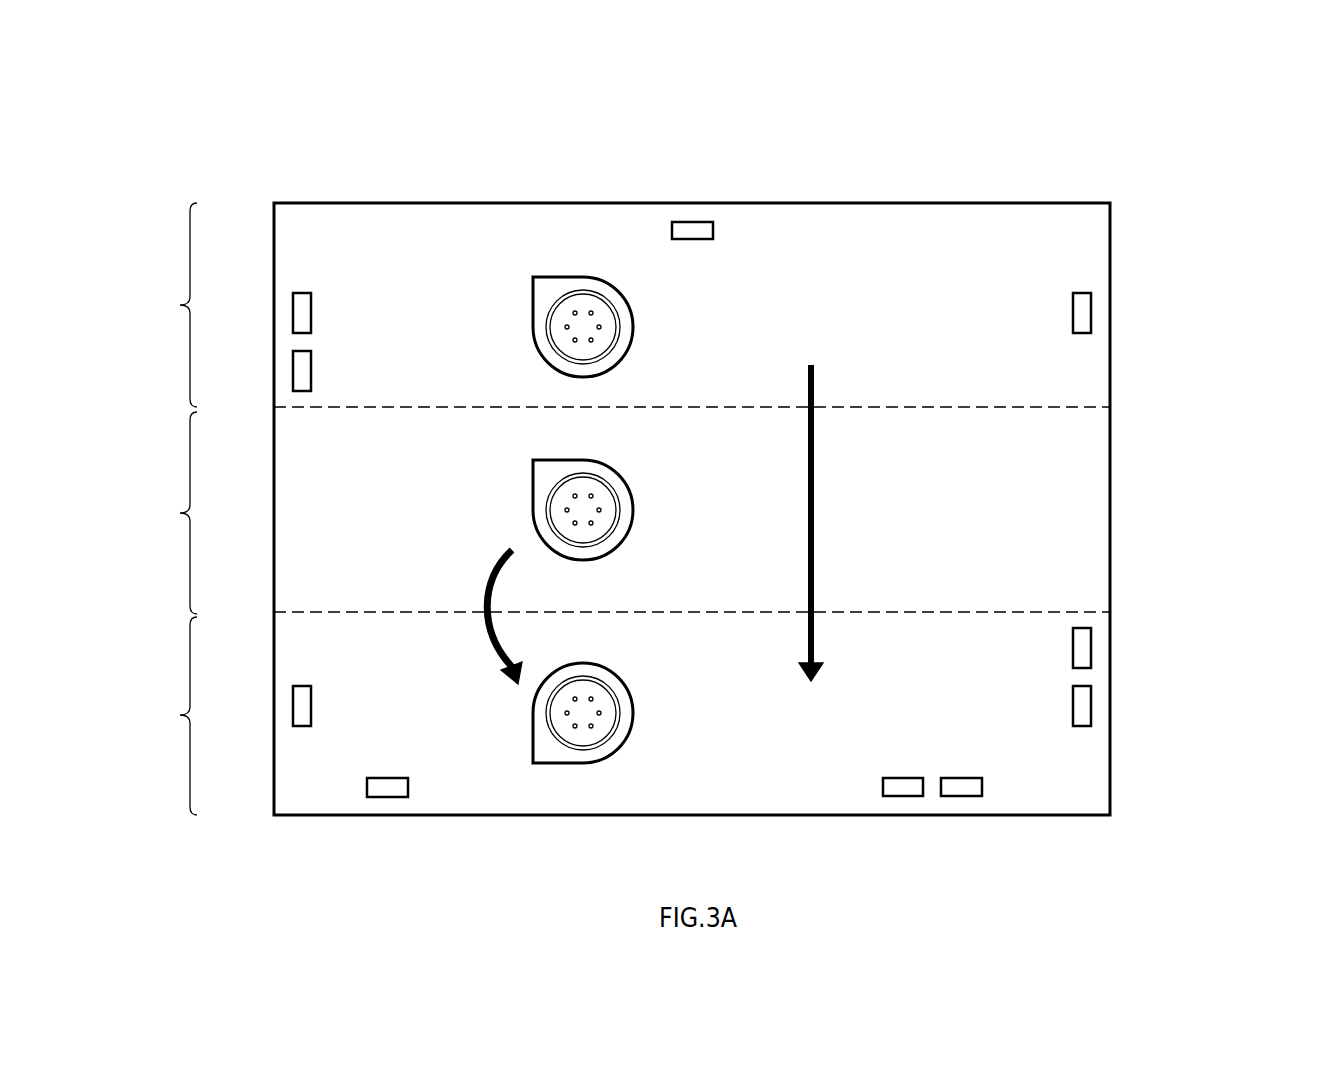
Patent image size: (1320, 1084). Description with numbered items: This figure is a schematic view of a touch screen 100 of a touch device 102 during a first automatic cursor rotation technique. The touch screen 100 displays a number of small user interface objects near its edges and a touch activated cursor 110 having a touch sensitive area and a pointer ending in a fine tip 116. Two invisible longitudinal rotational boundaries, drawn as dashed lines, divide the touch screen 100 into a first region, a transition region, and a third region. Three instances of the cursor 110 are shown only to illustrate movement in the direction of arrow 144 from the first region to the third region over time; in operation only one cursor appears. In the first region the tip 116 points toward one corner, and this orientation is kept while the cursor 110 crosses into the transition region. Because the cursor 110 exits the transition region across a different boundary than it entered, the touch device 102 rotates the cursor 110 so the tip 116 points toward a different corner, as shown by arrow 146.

The touch screen 100 is at (1110, 398).
The touch device 102 is at (1238, 196).
The touch activated cursor 110 is at (622, 358).
The tip 116 is at (533, 277).
The arrow 144 is at (814, 535).
The arrow 146 is at (486, 591).